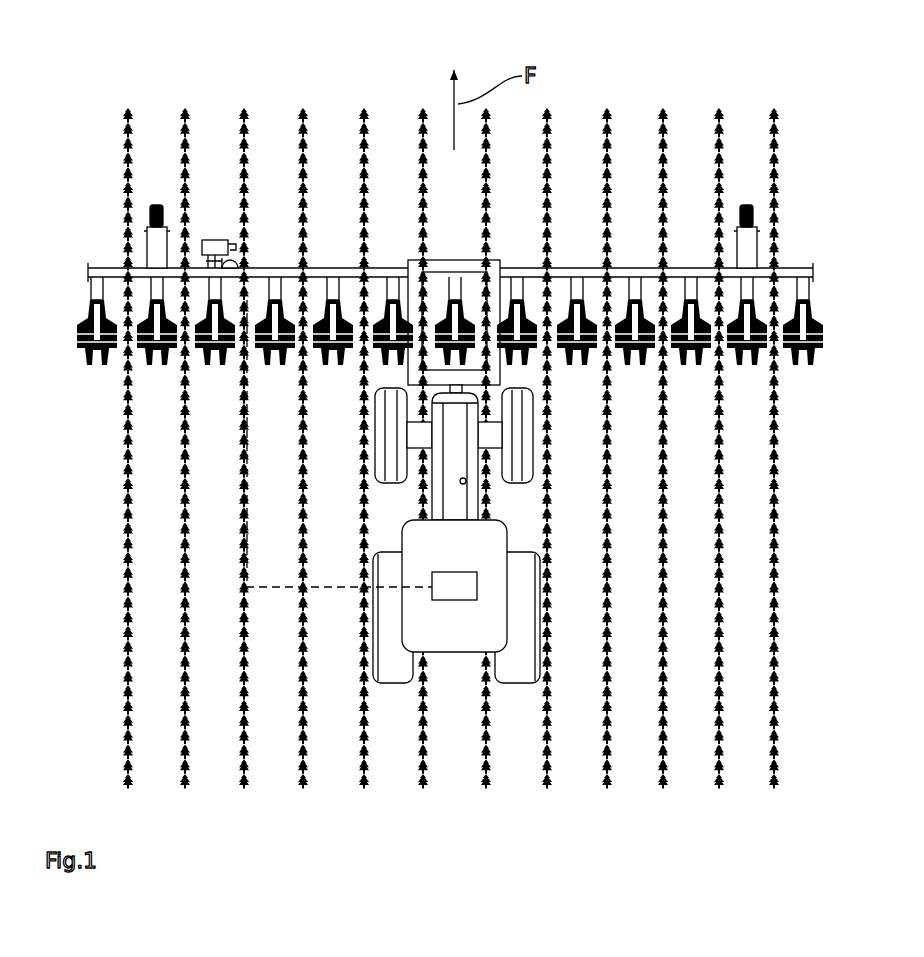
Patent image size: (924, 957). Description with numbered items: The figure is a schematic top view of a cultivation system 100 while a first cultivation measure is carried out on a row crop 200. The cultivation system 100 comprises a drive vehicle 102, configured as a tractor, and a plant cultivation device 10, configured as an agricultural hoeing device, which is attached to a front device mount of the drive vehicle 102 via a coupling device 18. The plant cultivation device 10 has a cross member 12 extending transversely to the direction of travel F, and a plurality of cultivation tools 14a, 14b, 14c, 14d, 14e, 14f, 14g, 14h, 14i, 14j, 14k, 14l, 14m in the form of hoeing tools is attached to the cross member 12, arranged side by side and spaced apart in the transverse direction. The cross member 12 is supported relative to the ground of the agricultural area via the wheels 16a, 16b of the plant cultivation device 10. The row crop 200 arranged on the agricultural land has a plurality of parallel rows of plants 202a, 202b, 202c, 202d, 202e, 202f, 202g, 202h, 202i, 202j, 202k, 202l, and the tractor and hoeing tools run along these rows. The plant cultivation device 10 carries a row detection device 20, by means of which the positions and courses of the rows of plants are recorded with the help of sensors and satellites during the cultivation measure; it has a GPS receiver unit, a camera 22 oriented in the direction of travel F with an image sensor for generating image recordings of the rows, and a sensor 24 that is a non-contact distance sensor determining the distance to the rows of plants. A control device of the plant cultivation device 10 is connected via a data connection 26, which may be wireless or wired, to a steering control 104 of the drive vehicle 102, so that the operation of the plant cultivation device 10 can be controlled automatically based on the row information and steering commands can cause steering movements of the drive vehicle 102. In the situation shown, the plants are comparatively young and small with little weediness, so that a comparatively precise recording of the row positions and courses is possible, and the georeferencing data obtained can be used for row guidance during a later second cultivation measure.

The plant cultivation device 10 is at (812, 206).
The cross member 12 is at (790, 268).
The cultivation tool 14a is at (97, 372).
The cultivation tool 14b is at (157, 372).
The cultivation tool 14c is at (215, 372).
The cultivation tool 14d is at (275, 372).
The cultivation tool 14e is at (314, 300).
The cultivation tool 14f is at (378, 297).
The cultivation tool 14g is at (437, 297).
The cultivation tool 14h is at (535, 297).
The cultivation tool 14i is at (577, 372).
The cultivation tool 14j is at (635, 372).
The cultivation tool 14k is at (691, 372).
The cultivation tool 14l is at (747, 372).
The cultivation tool 14m is at (803, 372).
The wheel 16a is at (156, 195).
The wheel 16b is at (747, 195).
The coupling device 18 is at (397, 372).
The row detection device 20 is at (210, 232).
The camera 22 is at (233, 244).
The sensor 24 is at (240, 266).
The data connection 26 is at (268, 597).
The cultivation system 100 is at (567, 486).
The drive vehicle 102 is at (487, 628).
The steering control 104 is at (455, 578).
The row crop 200 is at (95, 120).
The row of plants 202a is at (130, 762).
The row of plants 202b is at (187, 762).
The row of plants 202c is at (246, 762).
The row of plants 202d is at (305, 762).
The row of plants 202e is at (366, 762).
The row of plants 202f is at (425, 762).
The row of plants 202g is at (488, 762).
The row of plants 202h is at (549, 762).
The row of plants 202i is at (609, 762).
The row of plants 202j is at (665, 762).
The row of plants 202k is at (721, 762).
The row of plants 202l is at (776, 762).